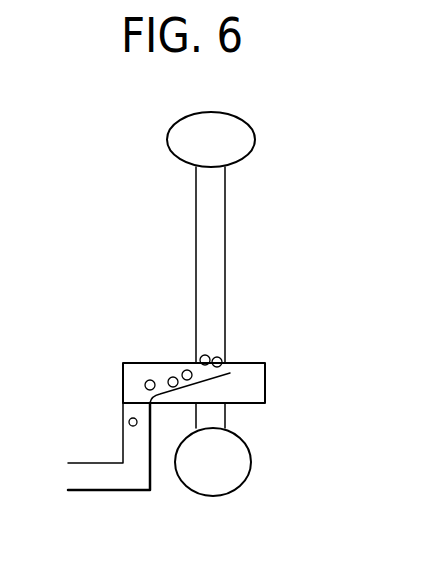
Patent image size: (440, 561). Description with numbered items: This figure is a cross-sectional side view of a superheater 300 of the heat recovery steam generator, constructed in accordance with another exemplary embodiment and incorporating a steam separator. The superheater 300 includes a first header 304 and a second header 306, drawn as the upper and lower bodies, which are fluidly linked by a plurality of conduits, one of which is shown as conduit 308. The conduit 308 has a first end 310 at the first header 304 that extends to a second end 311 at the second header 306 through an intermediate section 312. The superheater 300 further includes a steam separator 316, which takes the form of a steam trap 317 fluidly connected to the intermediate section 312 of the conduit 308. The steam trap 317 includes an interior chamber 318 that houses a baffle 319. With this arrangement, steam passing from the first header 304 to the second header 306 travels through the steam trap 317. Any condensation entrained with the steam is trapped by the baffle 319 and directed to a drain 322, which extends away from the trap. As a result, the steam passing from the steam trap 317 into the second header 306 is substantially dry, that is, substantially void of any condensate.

The superheater 300 is at (312, 199).
The first header 304 is at (258, 120).
The second header 306 is at (260, 463).
The conduit 308 is at (240, 276).
The first end 310 is at (237, 166).
The second end 311 is at (224, 430).
The intermediate section 312 is at (196, 263).
The steam separator 316 is at (125, 345).
The steam trap 317 is at (275, 377).
The interior chamber 318 is at (248, 362).
The baffle 319 is at (185, 386).
The drain 322 is at (95, 462).